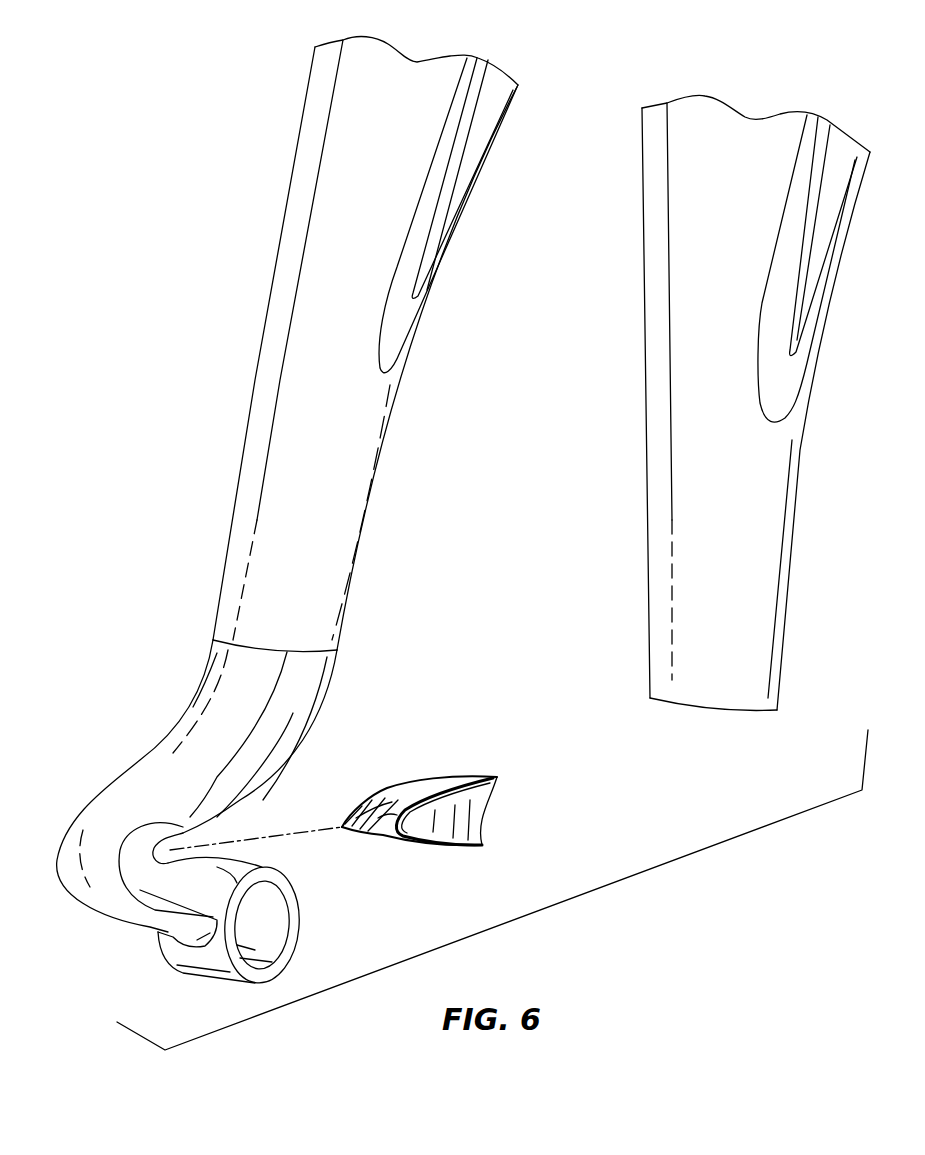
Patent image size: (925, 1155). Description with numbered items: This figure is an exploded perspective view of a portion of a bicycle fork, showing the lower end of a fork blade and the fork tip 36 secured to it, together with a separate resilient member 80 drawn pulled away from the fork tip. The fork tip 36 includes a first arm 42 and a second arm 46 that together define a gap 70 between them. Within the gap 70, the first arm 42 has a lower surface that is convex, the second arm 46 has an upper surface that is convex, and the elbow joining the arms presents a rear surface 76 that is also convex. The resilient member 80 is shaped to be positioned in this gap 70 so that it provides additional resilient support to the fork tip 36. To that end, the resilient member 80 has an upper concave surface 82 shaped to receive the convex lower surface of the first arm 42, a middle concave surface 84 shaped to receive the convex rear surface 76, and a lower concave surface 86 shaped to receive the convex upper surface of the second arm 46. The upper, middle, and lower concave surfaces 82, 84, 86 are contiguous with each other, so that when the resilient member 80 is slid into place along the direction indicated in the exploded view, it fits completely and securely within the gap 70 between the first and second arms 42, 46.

The fork tip 36 is at (212, 693).
The first arm 42 is at (133, 790).
The second arm 46 is at (143, 905).
The gap 70 is at (183, 840).
The rear surface 76 is at (162, 867).
The resilient member 80 is at (453, 813).
The upper concave surface 82 is at (438, 797).
The middle concave surface 84 is at (370, 830).
The lower concave surface 86 is at (393, 835).